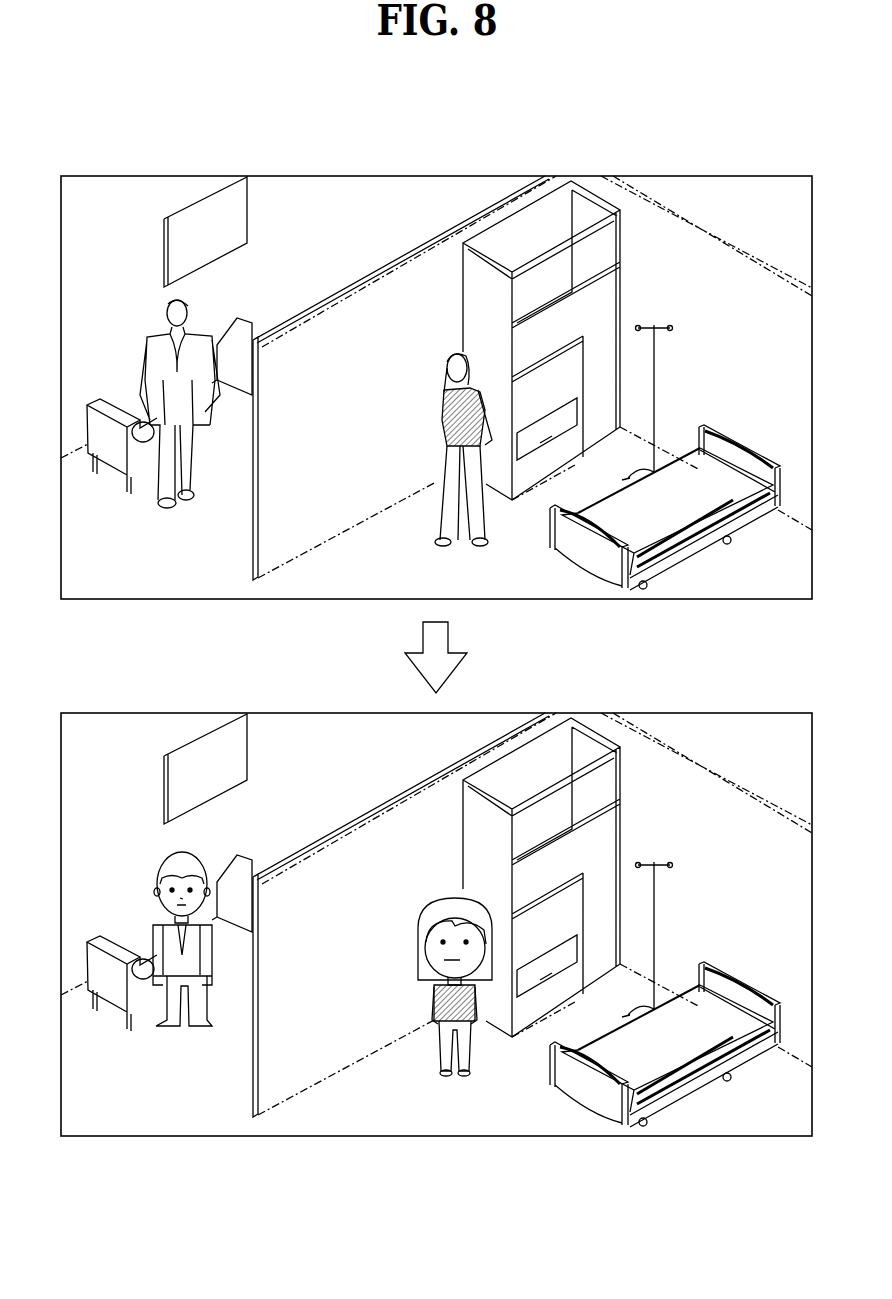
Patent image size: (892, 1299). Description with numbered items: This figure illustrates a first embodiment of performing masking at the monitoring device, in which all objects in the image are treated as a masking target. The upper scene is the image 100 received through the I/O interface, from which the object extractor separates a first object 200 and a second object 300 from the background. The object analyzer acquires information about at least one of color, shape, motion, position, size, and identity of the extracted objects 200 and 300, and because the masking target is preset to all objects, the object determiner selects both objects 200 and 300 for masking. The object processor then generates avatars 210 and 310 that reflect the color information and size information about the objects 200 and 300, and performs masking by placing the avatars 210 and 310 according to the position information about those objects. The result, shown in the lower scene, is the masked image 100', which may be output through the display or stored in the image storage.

The image 100 is at (436, 353).
The first object 200 is at (190, 298).
The second object 300 is at (450, 352).
The masked image 100' is at (436, 892).
The avatar 210 is at (188, 848).
The avatar 310 is at (452, 898).